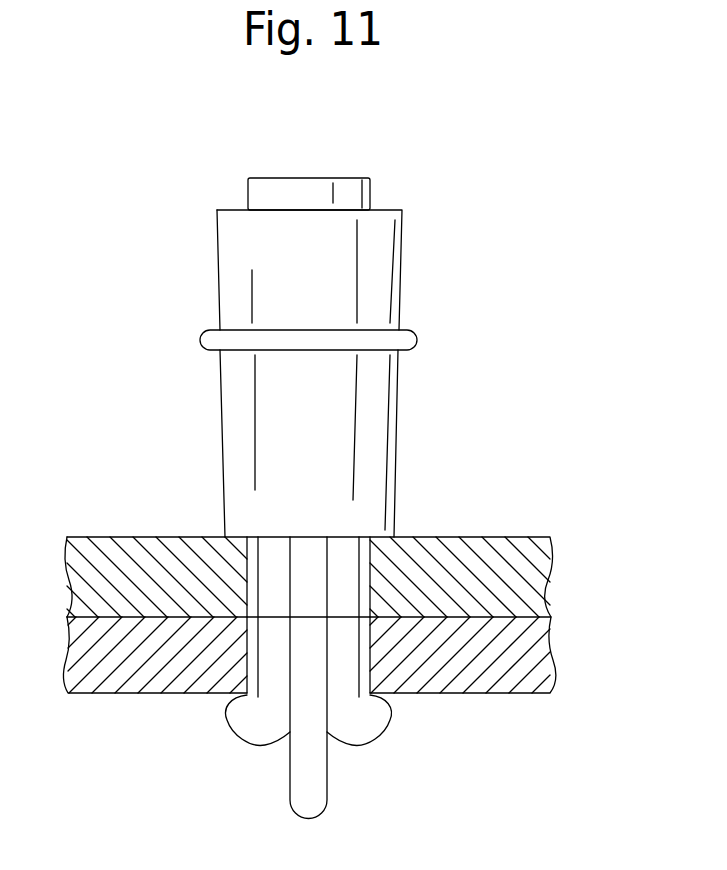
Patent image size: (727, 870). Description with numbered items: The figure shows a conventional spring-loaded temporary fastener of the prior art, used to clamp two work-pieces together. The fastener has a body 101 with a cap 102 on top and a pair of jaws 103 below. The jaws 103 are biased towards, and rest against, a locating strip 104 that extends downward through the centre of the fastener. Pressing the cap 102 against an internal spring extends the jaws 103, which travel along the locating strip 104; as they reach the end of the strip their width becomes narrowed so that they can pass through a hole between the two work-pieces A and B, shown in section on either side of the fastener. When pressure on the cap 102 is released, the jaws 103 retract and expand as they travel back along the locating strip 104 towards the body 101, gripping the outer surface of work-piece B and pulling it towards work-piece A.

The body 101 is at (268, 427).
The cap 102 is at (281, 190).
The jaws 103 is at (252, 737).
The locating strip 104 is at (317, 783).
The work-piece A is at (122, 565).
The work-piece B is at (125, 658).